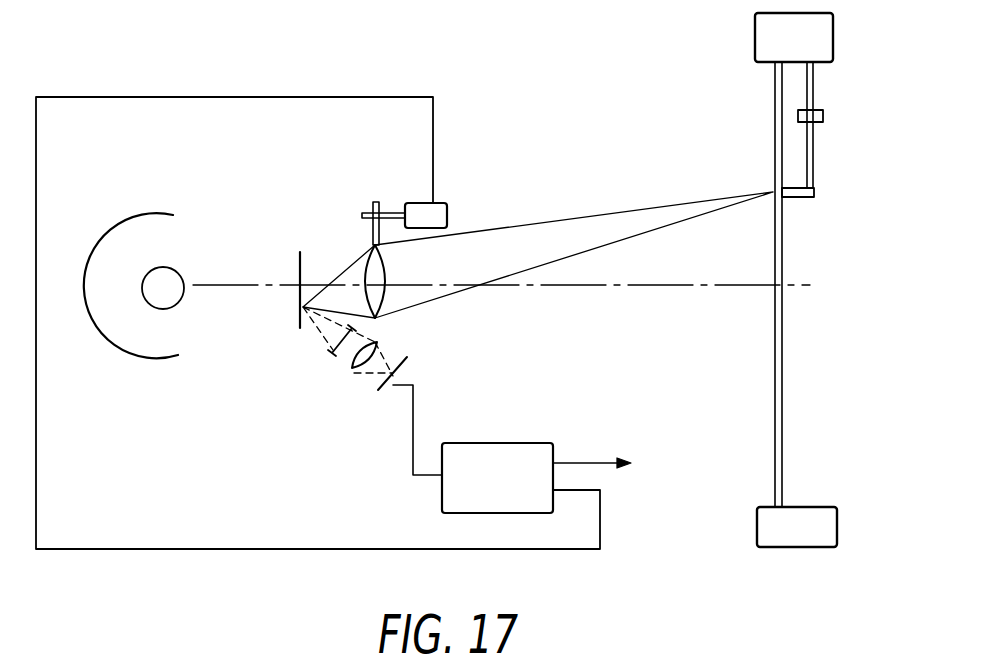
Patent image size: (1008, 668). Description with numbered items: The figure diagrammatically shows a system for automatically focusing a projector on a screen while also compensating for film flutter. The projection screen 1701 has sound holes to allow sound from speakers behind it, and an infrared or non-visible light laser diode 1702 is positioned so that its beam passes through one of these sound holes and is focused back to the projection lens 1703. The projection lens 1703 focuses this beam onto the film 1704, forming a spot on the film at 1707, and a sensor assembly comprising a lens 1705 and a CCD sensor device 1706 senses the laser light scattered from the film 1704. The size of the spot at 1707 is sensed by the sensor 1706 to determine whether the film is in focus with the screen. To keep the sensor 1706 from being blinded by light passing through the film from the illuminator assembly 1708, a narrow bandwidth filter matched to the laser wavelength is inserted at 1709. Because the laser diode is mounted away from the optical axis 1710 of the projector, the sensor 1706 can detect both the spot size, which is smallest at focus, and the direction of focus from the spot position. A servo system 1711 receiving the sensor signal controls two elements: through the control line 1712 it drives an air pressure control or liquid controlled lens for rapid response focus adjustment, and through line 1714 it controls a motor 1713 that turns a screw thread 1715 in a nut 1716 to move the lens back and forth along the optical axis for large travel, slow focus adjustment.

The projection screen 1701 is at (783, 432).
The laser diode 1702 is at (815, 192).
The projection lens 1703 is at (383, 298).
The film 1704 is at (300, 258).
The lens 1705 is at (352, 370).
The CCD sensor device 1706 is at (407, 360).
The spot on the film 1707 is at (300, 310).
The illuminator assembly 1708 is at (150, 340).
The narrow bandwidth filter 1709 is at (333, 350).
The optical axis 1710 is at (720, 285).
The servo system 1711 is at (480, 443).
The control line 1712 is at (583, 462).
The motor 1713 is at (447, 208).
The screw thread 1715 is at (392, 213).
The line 1714 is at (230, 548).
The nut 1716 is at (377, 210).